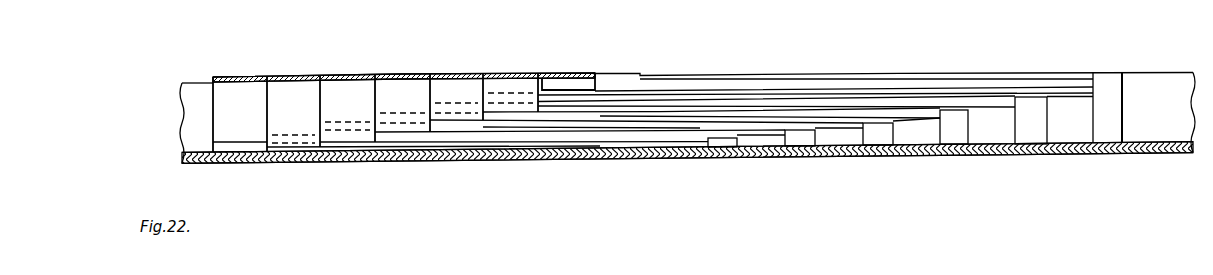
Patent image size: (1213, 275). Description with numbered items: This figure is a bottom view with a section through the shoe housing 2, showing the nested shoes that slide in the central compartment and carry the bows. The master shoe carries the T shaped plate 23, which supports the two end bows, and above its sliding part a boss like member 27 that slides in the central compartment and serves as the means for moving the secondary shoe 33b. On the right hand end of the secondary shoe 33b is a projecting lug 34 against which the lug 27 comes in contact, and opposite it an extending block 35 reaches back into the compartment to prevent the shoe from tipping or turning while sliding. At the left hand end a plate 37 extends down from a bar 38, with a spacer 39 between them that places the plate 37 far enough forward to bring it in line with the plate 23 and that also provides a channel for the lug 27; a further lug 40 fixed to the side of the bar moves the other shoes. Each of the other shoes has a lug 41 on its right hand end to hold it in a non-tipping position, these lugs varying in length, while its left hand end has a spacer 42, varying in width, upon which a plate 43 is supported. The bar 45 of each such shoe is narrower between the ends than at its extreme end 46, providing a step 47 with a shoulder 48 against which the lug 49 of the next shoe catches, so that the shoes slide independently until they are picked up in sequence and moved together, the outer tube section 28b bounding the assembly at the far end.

The outer casing 2 is at (647, 151).
The plate 23 is at (572, 78).
The boss like member 27 is at (597, 73).
The outer tube section 28b is at (1148, 95).
The secondary shoe 33b is at (692, 98).
The projecting lug 34 is at (1102, 88).
The extending block 35 is at (1110, 128).
The plate 37 is at (522, 82).
The bar 38 is at (623, 102).
The spacer 39 is at (498, 88).
The lug 40 is at (522, 105).
The lug 41 is at (1037, 130).
The spacer 42 is at (445, 93).
The plate 43 is at (455, 78).
The bar 45 is at (620, 140).
The extreme end 46 is at (958, 125).
The step 47 is at (1017, 140).
The shoulder 48 is at (1017, 103).
The lug 49 is at (468, 117).